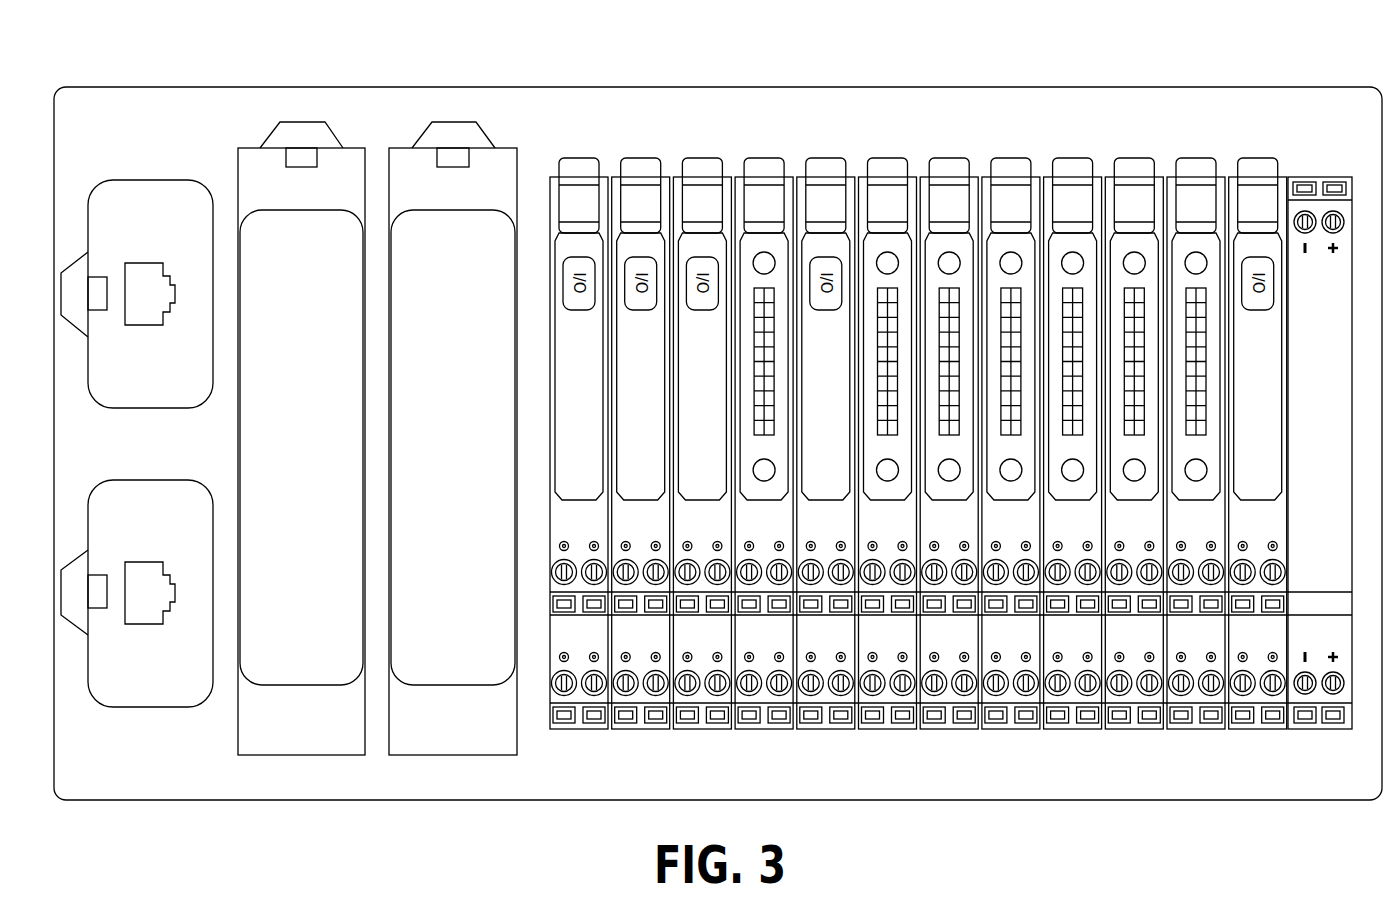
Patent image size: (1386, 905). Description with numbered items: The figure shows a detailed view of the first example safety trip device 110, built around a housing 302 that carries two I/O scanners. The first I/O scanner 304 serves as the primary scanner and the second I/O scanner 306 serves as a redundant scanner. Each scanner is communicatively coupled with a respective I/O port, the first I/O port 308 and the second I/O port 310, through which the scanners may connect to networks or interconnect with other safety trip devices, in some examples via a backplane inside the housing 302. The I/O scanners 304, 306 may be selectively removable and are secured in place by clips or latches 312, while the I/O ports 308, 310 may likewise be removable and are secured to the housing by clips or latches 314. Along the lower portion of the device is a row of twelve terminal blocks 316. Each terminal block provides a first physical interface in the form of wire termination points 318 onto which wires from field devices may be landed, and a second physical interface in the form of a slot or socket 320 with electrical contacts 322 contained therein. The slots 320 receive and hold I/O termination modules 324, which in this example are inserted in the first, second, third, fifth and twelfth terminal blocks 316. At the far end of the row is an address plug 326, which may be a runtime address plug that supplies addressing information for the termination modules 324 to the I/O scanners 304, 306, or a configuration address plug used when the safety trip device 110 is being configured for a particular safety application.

The safety trip device 110 is at (1057, 41).
The housing 302 is at (1214, 87).
The first I/O scanner 304 is at (253, 170).
The second I/O scanner 306 is at (403, 170).
The first I/O port 308 is at (137, 187).
The second I/O port 310 is at (137, 487).
The latches 312 is at (300, 128).
The latches 314 is at (73, 295).
The terminal blocks 316 is at (950, 477).
The wire termination points 318 is at (717, 745).
The slot 320 is at (989, 431).
The electrical contacts 322 is at (953, 313).
The I/O termination modules 324 is at (583, 240).
The address plug 326 is at (1322, 208).